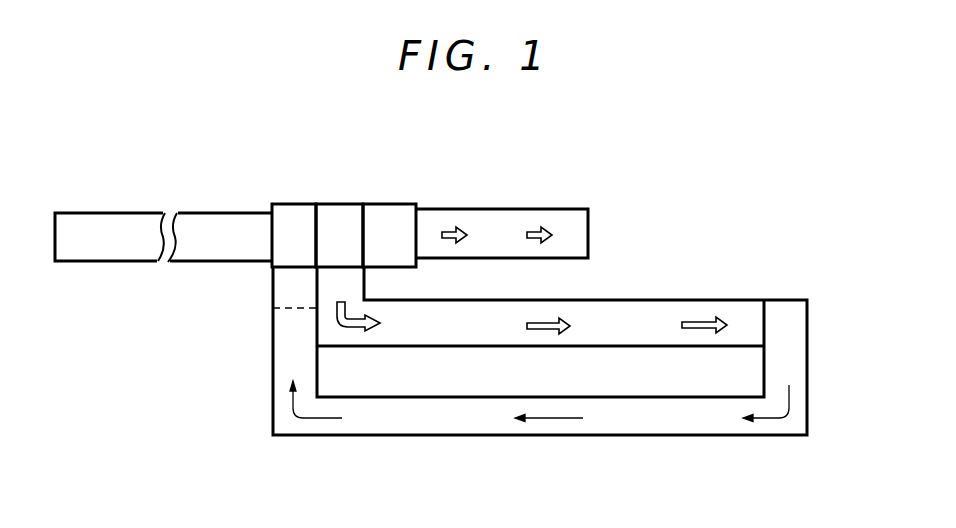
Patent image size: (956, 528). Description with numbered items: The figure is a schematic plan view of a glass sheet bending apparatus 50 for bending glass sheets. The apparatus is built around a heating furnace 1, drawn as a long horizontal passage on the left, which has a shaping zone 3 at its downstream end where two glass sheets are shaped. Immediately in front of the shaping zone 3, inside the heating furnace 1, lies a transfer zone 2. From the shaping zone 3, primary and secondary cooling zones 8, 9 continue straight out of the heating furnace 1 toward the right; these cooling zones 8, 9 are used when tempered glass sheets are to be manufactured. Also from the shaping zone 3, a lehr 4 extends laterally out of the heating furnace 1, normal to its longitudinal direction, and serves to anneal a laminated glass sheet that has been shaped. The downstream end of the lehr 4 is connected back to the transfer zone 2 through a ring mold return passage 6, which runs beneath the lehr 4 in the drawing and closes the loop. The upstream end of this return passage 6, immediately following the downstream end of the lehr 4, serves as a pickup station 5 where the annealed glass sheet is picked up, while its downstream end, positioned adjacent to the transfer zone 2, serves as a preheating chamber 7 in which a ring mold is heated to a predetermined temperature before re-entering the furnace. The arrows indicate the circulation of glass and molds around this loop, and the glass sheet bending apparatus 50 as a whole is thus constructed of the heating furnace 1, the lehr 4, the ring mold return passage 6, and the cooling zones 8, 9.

The heating furnace 1 is at (112, 220).
The transfer zone 2 is at (288, 213).
The shaping zone 3 is at (333, 210).
The primary cooling zone 8 is at (386, 210).
The secondary cooling zone 9 is at (492, 213).
The lehr 4 is at (647, 310).
The pickup station 5 is at (780, 293).
The ring mold return passage 6 is at (645, 423).
The preheating chamber 7 is at (280, 290).
The glass sheet bending apparatus 50 is at (243, 392).